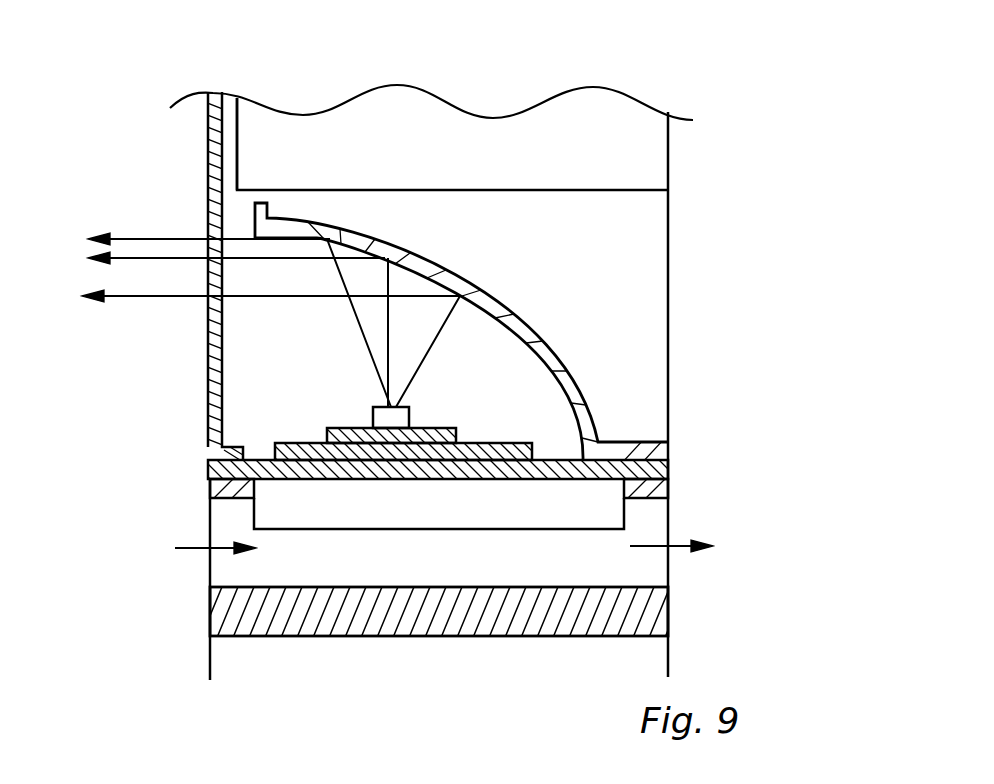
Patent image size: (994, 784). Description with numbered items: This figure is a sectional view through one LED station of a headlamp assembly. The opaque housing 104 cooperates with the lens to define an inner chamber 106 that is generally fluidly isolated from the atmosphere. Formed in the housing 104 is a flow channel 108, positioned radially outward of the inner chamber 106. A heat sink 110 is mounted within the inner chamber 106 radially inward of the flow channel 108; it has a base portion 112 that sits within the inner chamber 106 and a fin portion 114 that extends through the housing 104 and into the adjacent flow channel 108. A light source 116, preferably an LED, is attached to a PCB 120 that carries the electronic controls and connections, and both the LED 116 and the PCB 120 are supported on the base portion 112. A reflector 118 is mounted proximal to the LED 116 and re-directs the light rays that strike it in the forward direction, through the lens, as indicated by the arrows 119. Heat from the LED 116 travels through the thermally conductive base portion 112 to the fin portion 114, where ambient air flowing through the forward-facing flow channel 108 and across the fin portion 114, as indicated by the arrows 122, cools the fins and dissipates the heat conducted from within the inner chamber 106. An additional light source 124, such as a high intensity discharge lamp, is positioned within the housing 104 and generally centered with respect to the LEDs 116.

The housing 104 is at (228, 490).
The inner chamber 106 is at (279, 395).
The flow channel 108 is at (550, 552).
The heat sink 110 is at (670, 465).
The base portion 112 is at (543, 458).
The fin portion 114 is at (479, 503).
The light source 116 is at (400, 417).
The reflector 118 is at (425, 262).
The arrows 119 is at (129, 237).
The PCB 120 is at (458, 428).
The arrows 122 is at (200, 552).
The additional light source 124 is at (412, 155).